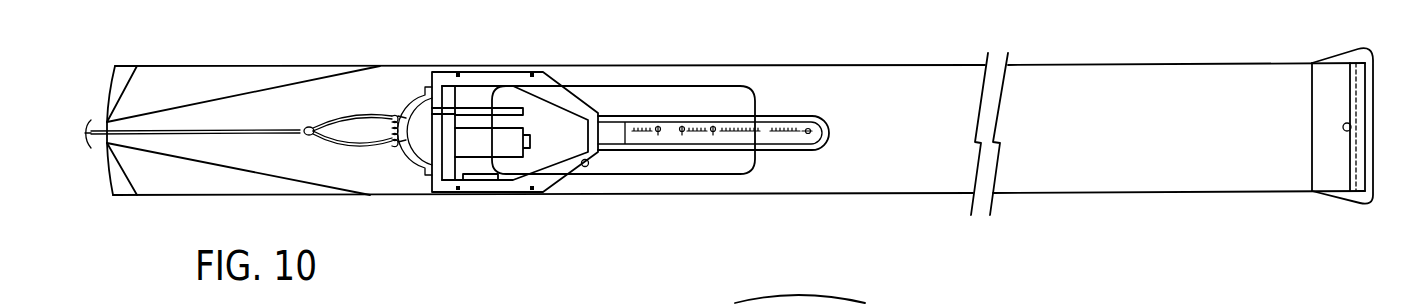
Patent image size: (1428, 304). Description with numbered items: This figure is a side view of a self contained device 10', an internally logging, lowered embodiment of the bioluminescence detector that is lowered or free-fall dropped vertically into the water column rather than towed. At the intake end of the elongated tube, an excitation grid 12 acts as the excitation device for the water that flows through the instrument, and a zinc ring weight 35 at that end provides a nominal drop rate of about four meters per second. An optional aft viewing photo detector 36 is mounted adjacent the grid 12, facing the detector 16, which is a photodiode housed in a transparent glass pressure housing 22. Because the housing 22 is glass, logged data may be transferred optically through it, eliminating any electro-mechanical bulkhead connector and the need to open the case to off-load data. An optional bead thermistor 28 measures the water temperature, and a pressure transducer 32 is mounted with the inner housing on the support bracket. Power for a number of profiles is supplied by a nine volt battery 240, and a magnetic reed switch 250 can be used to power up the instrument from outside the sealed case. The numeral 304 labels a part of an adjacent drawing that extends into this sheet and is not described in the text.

The self contained device 10' is at (736, 122).
The excitation grid 12 is at (1355, 193).
The detector 16 is at (810, 125).
The transparent inner housing 22 is at (828, 138).
The bead thermistor 28 is at (585, 167).
The pressure transducer 32 is at (472, 106).
The zinc ring weight 35 is at (1377, 173).
The aft viewing photo detector 36 is at (1343, 127).
The 9 volt battery 240 is at (510, 158).
The magnetic reed switch 250 is at (481, 183).
The arc member 304 is at (872, 303).